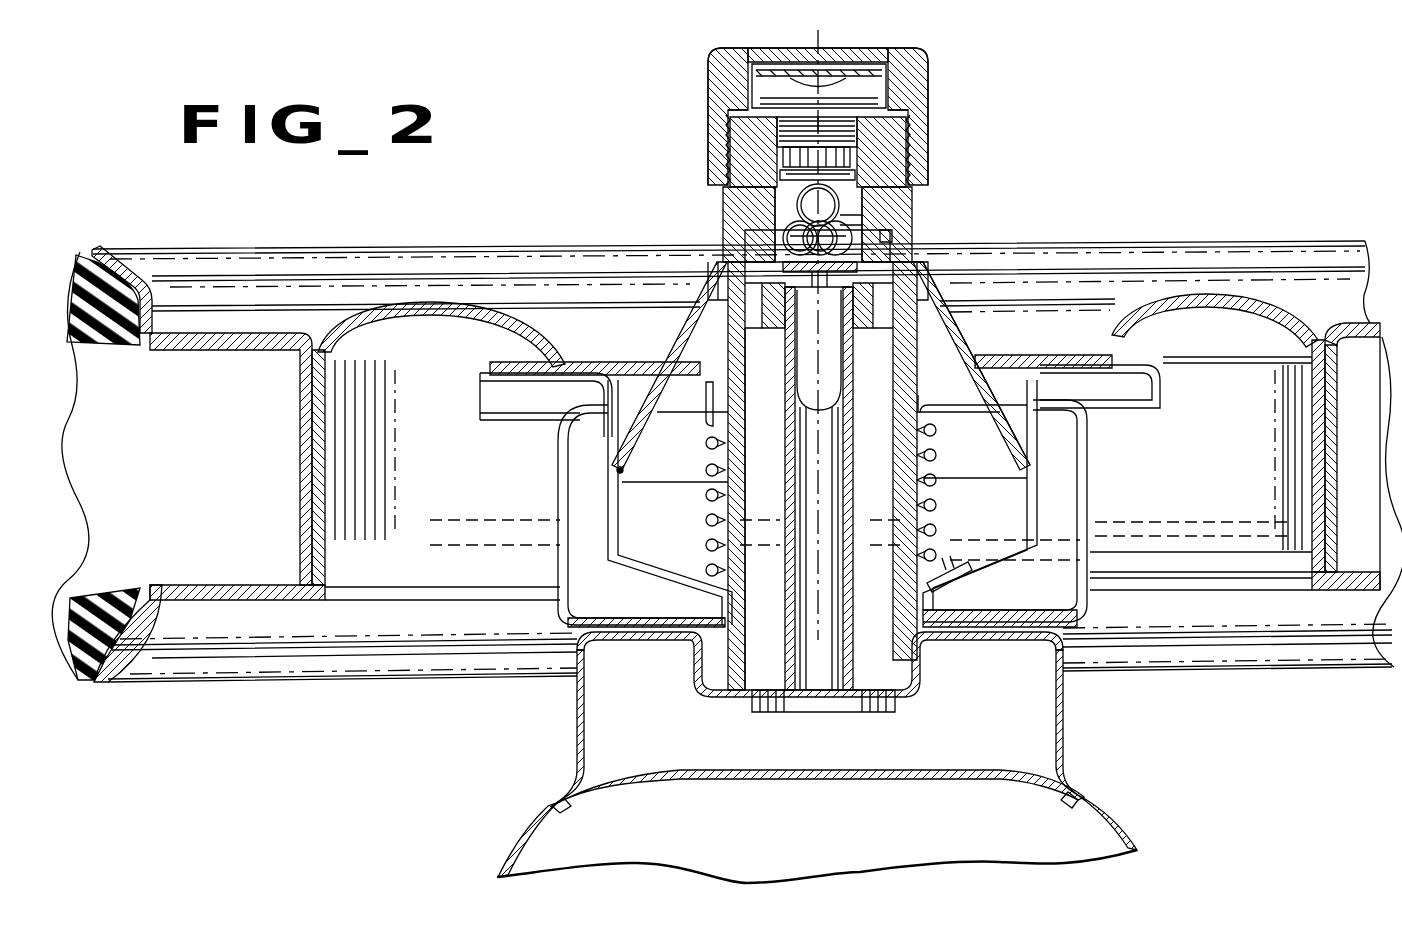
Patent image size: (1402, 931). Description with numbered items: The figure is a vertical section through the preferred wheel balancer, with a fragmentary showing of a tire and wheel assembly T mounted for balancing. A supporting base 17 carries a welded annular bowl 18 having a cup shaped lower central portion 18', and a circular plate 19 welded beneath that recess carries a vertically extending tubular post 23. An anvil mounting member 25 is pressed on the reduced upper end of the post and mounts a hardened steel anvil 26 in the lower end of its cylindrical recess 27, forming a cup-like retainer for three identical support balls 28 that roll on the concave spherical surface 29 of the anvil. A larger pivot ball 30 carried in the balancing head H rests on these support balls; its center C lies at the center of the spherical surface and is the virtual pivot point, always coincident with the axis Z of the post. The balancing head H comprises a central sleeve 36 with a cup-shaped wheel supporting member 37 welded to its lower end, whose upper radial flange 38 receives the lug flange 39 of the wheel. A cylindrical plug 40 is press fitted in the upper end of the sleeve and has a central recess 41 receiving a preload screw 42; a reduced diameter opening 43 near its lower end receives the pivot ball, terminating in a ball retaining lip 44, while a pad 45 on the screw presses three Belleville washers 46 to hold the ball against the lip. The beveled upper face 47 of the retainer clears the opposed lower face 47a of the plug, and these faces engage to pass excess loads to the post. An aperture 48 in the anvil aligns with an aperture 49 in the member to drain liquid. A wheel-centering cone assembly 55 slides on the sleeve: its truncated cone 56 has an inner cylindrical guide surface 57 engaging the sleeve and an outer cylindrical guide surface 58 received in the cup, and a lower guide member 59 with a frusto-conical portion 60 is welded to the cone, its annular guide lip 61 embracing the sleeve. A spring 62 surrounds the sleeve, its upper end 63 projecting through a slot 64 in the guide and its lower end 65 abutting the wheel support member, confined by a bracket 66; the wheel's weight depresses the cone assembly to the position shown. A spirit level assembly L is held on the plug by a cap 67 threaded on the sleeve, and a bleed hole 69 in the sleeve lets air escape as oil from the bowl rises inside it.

The tire and wheel assembly T is at (208, 250).
The balancing head H is at (696, 80).
The spirit level assembly L is at (848, 64).
The axis of the post Z is at (819, 324).
The center of the pivot ball C is at (870, 200).
The supporting base 17 is at (575, 738).
The annular bowl 18 is at (612, 516).
The cup shaped lower central portion 18' is at (820, 677).
The circular plate 19 is at (798, 712).
The tubular pedestal or post 23 is at (830, 536).
The anvil mounting member 25 is at (872, 305).
The anvil 26 is at (760, 300).
The cylindrical recess 27 is at (775, 202).
The support balls 28 is at (790, 260).
The concave spherical surface 29 is at (790, 236).
The pivot ball 30 is at (880, 183).
The central sleeve 36 is at (720, 332).
The wheel supporting member 37 is at (600, 449).
The upper radial flange 38 is at (515, 375).
The lug flange 39 is at (556, 364).
The cylindrical plug 40 is at (718, 125).
The central recess 41 is at (735, 147).
The preload screw 42 is at (912, 118).
The reduced diameter opening 43 is at (770, 187).
The ball retaining lip 44 is at (875, 214).
The pad 45 is at (900, 143).
The Belleville washers 46 is at (740, 166).
The upper face 47 is at (780, 218).
The lower face 47a is at (880, 230).
The aperture 48 is at (905, 260).
The aperture 49 is at (920, 286).
The wheel-centering cone assembly 55 is at (960, 323).
The truncated cone 56 is at (962, 350).
The inner cylindrical guide surface 57 is at (722, 290).
The outer cylindrical guide surface 58 is at (615, 470).
The lower guide member 59 is at (976, 410).
The frusto-conical portion 60 is at (1015, 455).
The annular guide lip 61 is at (718, 436).
The spring 62 is at (706, 495).
The upper end of the spring 63 is at (710, 385).
The slot 64 is at (700, 412).
The lower end of the spring 65 is at (968, 575).
The bracket 66 is at (940, 560).
The cap 67 is at (920, 88).
The bleed hole 69 is at (900, 393).